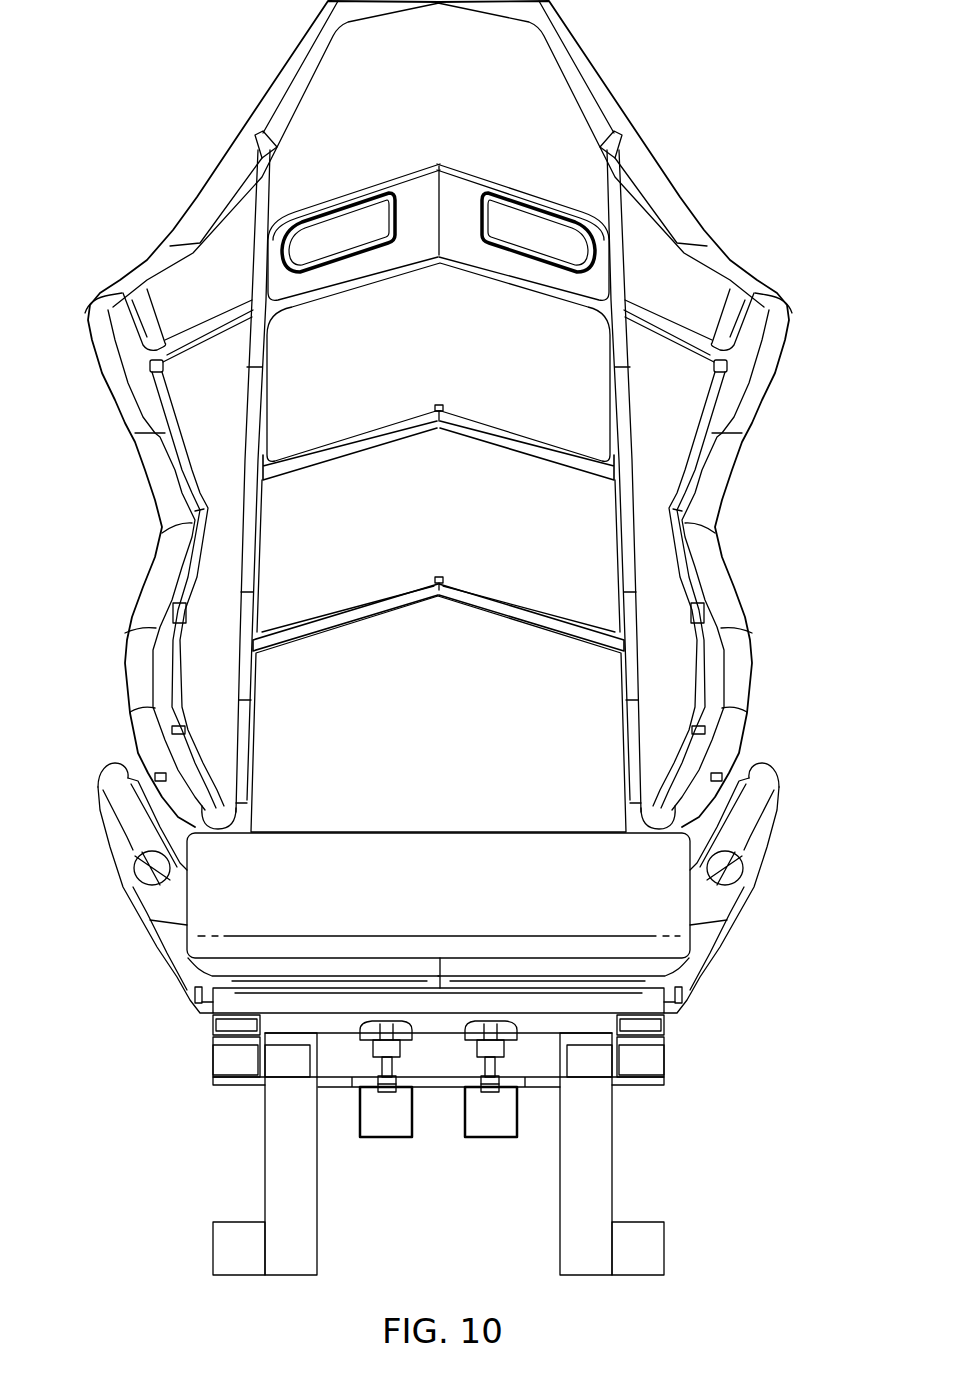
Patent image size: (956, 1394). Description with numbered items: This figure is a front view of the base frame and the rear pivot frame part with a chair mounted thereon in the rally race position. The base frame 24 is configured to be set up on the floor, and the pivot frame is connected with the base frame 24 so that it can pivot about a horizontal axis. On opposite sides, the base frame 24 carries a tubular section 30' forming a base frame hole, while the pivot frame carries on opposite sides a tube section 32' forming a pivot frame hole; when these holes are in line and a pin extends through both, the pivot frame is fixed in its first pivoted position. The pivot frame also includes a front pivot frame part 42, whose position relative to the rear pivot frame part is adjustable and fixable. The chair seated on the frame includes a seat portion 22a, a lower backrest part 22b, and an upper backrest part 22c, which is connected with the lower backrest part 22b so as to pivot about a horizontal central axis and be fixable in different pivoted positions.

The seat cushion section 22a is at (462, 904).
The lower backrest part 22b is at (461, 744).
The upper backrest part 22c is at (460, 347).
The base frame 24 is at (585, 1187).
The tubular section 30' is at (441, 1110).
The tube section 32' is at (440, 1104).
The front pivot frame part 42 is at (490, 1138).